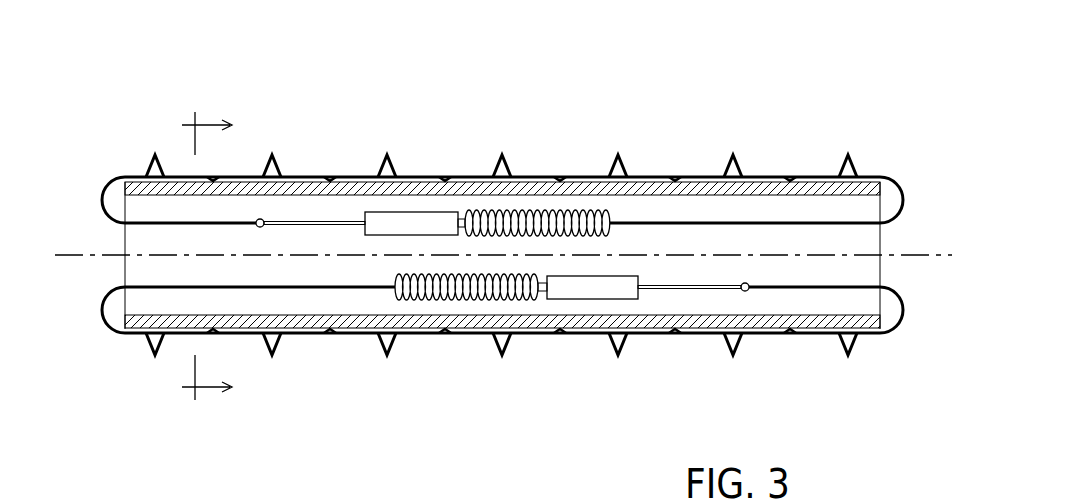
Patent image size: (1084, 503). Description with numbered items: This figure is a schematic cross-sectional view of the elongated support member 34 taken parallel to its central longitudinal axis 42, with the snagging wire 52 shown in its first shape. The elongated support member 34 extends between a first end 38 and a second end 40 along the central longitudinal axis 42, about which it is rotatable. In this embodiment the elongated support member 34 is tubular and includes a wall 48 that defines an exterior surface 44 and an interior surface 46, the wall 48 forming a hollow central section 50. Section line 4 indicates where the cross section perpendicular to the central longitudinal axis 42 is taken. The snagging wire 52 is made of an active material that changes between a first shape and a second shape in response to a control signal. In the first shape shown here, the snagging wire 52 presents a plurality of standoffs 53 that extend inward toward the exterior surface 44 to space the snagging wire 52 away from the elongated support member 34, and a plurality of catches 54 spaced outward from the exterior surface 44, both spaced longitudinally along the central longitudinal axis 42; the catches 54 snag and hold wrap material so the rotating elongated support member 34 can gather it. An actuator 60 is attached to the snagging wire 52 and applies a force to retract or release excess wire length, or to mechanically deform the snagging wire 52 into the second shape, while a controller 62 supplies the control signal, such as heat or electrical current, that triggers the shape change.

The section line 4- 4 is at (207, 258).
The elongated support member 34 is at (780, 177).
The first end 38 is at (125, 272).
The second end 40 is at (882, 267).
The central longitudinal axis 42 is at (934, 252).
The exterior surface 44 is at (225, 333).
The interior surface 46 is at (303, 307).
The wall 48 is at (350, 323).
The hollow central section 50 is at (197, 242).
The snagging wire 52 is at (323, 178).
The standoff 53 is at (233, 177).
The catch 54 is at (393, 163).
The actuator 60 is at (543, 215).
The controller 62 is at (425, 227).